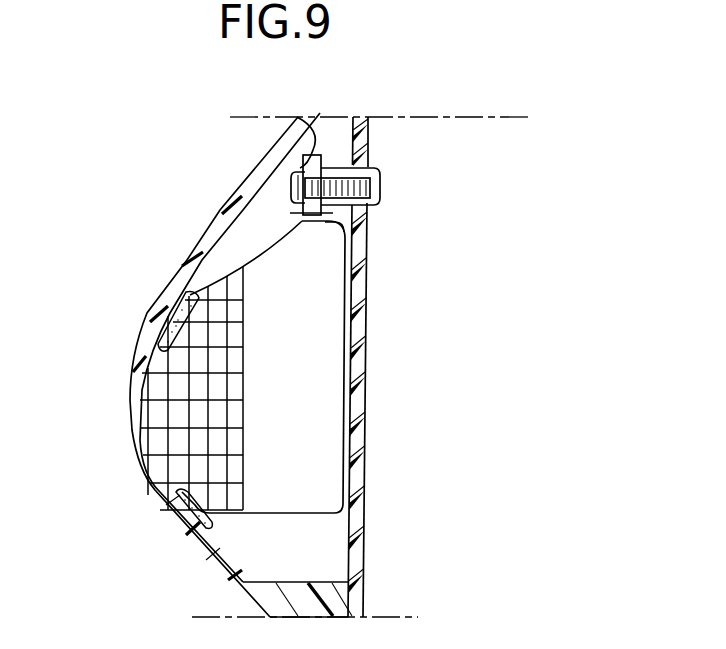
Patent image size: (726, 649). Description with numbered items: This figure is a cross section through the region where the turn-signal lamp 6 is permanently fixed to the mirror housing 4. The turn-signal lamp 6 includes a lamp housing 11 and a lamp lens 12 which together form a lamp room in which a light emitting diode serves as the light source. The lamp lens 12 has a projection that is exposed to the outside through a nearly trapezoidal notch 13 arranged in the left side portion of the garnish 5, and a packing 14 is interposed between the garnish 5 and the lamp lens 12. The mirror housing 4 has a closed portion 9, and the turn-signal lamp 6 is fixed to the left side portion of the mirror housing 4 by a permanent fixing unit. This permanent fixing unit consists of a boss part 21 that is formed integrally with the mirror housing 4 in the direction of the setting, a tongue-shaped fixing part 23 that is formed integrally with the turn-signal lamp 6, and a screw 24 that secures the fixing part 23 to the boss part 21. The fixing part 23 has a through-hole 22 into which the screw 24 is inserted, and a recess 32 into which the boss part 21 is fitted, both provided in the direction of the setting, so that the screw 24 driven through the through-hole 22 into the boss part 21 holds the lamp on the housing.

The mirror housing 4 is at (369, 523).
The garnish 5 is at (168, 528).
The turn-signal lamp 6 is at (320, 381).
The portion closed 9 is at (345, 558).
The lamp housing 11 is at (318, 302).
The lamp lens 12 is at (140, 415).
The notch 13 is at (156, 483).
The packing 14 is at (197, 547).
The boss part 21 is at (353, 150).
The through-hole 22 is at (302, 168).
The fixing part 23 is at (310, 135).
The screw 24 is at (292, 188).
The recess 32 is at (300, 183).